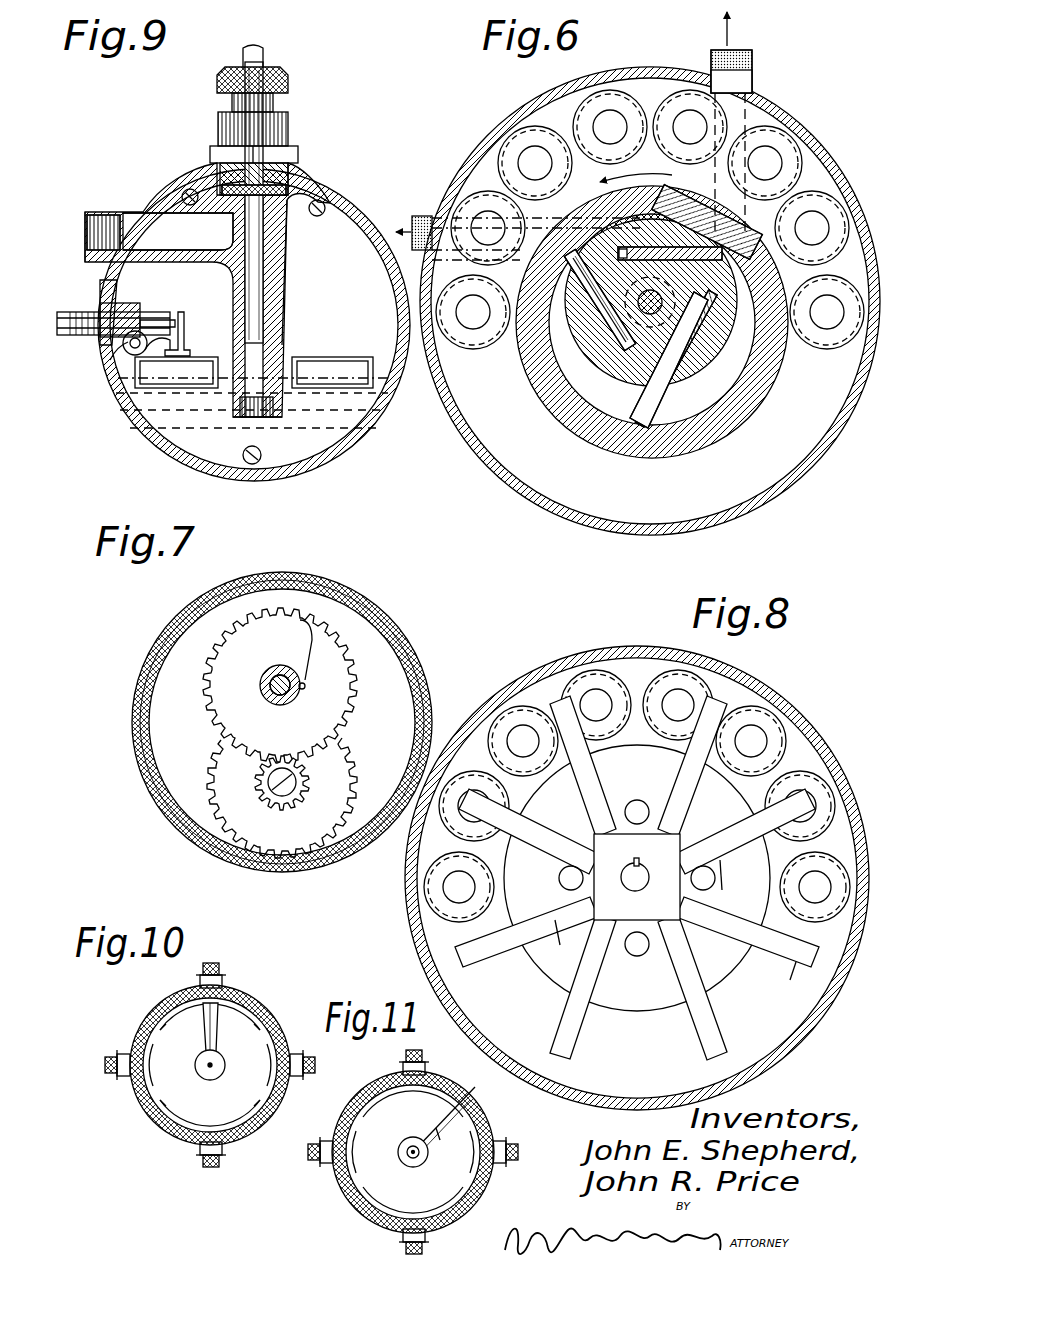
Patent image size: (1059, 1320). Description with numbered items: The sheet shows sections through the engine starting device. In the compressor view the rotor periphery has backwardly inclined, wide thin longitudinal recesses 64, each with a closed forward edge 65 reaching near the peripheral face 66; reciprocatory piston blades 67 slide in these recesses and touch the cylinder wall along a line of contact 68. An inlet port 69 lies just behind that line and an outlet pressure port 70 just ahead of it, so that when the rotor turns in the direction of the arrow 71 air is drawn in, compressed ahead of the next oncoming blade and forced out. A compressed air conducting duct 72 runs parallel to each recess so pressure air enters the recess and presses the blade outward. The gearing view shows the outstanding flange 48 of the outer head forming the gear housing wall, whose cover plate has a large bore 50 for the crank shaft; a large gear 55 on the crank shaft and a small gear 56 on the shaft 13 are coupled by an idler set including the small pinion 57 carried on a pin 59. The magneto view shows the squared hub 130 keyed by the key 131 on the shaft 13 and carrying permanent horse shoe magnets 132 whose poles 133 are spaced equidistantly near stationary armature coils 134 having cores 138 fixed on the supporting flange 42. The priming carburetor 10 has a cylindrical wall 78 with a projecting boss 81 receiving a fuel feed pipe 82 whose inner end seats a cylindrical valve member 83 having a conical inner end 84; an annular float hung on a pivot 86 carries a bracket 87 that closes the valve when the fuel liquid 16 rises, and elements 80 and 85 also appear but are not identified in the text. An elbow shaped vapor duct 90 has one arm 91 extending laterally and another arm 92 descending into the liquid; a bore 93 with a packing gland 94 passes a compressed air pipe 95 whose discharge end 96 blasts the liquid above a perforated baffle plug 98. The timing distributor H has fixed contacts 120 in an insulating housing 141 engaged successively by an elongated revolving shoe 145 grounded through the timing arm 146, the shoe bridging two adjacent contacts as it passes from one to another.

In FIG. 9, the priming carburetor 10 is at (322, 466).
In FIG. 6, the shaft 13 is at (650, 302).
In FIG. 7, the shaft 13 is at (270, 690).
In FIG. 8, the shaft 13 is at (626, 887).
In FIG. 6, the fuel liquid 16 is at (416, 234).
In FIG. 8, the vertical supporting flange 42 is at (770, 684).
In FIG. 7, the outstanding flange 48 is at (404, 658).
In FIG. 7, the large bore 50 is at (262, 680).
In FIG. 7, the large gear 55 is at (310, 636).
In FIG. 7, the small gear 56 is at (304, 684).
In FIG. 7, the small pinion 57 is at (300, 772).
In FIG. 7, the pin 59 is at (216, 742).
In FIG. 6, the longitudinal recesses 64 is at (612, 376).
In FIG. 6, the forward edge 65 is at (592, 362).
In FIG. 6, the peripheral face 66 is at (636, 386).
In FIG. 6, the reciprocatory piston blades 67 is at (656, 409).
In FIG. 6, the line of contact 68 is at (664, 205).
In FIG. 6, the inlet port 69 is at (420, 216).
In FIG. 6, the outlet pressure port 70 is at (754, 74).
In FIG. 6, the arrow 71 is at (636, 167).
In FIG. 6, the compressed air conducting duct 72 is at (700, 360).
In FIG. 9, the cylindrical wall 78 is at (298, 190).
In FIG. 9, the pivot 80 is at (150, 320).
In FIG. 9, the projecting boss 81 is at (92, 288).
In FIG. 9, the fuel feed pipe 82 is at (60, 320).
In FIG. 9, the cylindrical valve member 83 is at (170, 318).
In FIG. 9, the conical inner end 84 is at (104, 338).
In FIG. 9, the float 85 is at (328, 358).
In FIG. 9, the pivot 86 is at (112, 362).
In FIG. 9, the bracket 87 is at (184, 334).
In FIG. 9, the elbow shaped vapor duct 90 is at (178, 231).
In FIG. 9, the arm 91 is at (119, 232).
In FIG. 9, the other arm 92 is at (256, 388).
In FIG. 9, the bore 93 is at (220, 188).
In FIG. 9, the packing gland 94 is at (292, 152).
In FIG. 9, the compressed air pipe 95 is at (266, 58).
In FIG. 9, the discharge end 96 is at (284, 330).
In FIG. 9, the perforated baffle plug 98 is at (256, 420).
In FIG. 10, the fixed contacts 120 is at (235, 1000).
In FIG. 11, the fixed contacts 120 is at (496, 1134).
In FIG. 8, the squared hub 130 is at (637, 878).
In FIG. 8, the key 131 is at (640, 860).
In FIG. 8, the permanent horse shoe magnets 132 is at (555, 947).
In FIG. 8, the poles 133 is at (795, 982).
In FIG. 8, the stationary armature coils 134 is at (828, 740).
In FIG. 8, the cores 138 is at (846, 912).
In FIG. 10, the insulating housing 141 is at (270, 1110).
In FIG. 11, the insulating housing 141 is at (470, 1218).
In FIG. 10, the revolving shoe 145 is at (224, 1022).
In FIG. 11, the revolving shoe 145 is at (476, 1102).
In FIG. 10, the timing arm 146 is at (202, 1015).
In FIG. 11, the timing arm 146 is at (440, 1142).
In FIG. 10, the timing distributor H is at (150, 1126).
In FIG. 11, the timing distributor H is at (352, 1206).